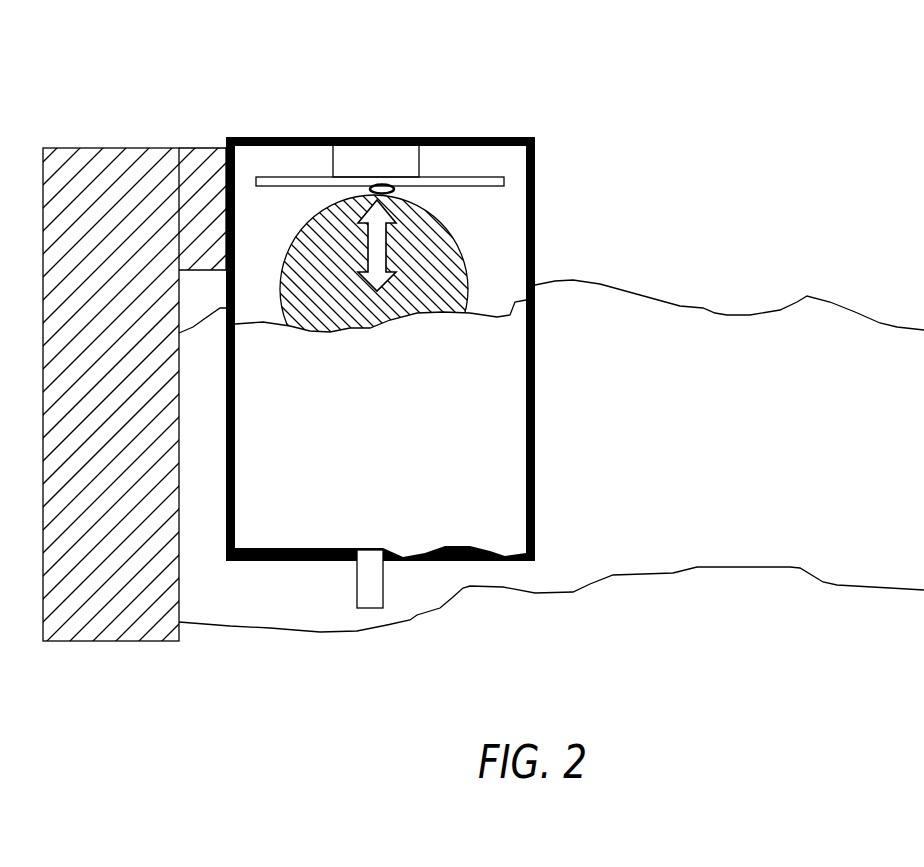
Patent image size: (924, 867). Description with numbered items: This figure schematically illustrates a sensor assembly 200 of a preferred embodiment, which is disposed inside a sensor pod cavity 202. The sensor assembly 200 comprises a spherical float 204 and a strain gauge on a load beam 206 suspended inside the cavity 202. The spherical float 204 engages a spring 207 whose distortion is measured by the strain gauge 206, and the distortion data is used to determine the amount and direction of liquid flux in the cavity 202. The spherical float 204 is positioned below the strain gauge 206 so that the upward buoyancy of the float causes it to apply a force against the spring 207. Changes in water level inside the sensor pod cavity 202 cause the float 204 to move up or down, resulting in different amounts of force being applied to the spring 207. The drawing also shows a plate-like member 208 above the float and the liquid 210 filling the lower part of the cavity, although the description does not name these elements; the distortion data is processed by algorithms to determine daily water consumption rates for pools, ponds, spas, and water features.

The sensor assembly 200 is at (513, 216).
The sensor pod cavity 202 is at (505, 137).
The spherical float 204 is at (470, 279).
The strain gauge on a load beam 206 is at (420, 157).
The spring 207 is at (384, 192).
The plate 208 is at (285, 158).
The fluid 210 is at (359, 425).